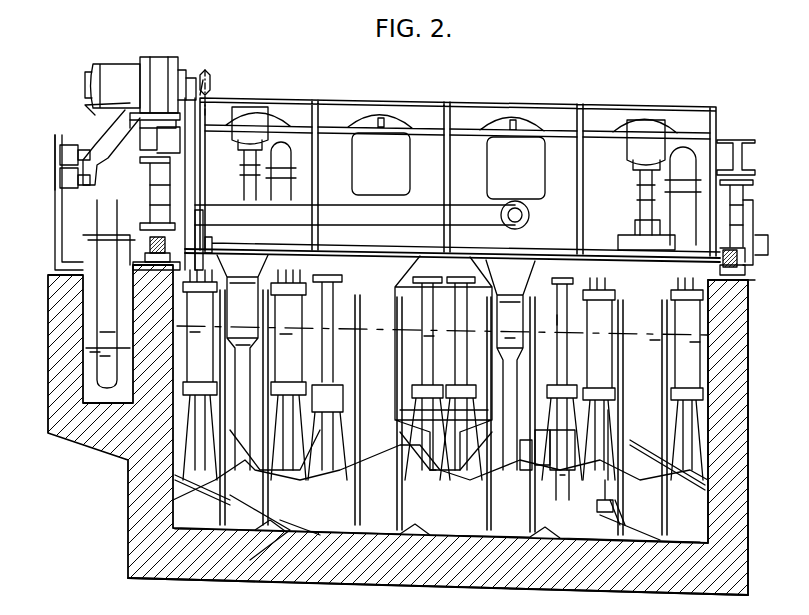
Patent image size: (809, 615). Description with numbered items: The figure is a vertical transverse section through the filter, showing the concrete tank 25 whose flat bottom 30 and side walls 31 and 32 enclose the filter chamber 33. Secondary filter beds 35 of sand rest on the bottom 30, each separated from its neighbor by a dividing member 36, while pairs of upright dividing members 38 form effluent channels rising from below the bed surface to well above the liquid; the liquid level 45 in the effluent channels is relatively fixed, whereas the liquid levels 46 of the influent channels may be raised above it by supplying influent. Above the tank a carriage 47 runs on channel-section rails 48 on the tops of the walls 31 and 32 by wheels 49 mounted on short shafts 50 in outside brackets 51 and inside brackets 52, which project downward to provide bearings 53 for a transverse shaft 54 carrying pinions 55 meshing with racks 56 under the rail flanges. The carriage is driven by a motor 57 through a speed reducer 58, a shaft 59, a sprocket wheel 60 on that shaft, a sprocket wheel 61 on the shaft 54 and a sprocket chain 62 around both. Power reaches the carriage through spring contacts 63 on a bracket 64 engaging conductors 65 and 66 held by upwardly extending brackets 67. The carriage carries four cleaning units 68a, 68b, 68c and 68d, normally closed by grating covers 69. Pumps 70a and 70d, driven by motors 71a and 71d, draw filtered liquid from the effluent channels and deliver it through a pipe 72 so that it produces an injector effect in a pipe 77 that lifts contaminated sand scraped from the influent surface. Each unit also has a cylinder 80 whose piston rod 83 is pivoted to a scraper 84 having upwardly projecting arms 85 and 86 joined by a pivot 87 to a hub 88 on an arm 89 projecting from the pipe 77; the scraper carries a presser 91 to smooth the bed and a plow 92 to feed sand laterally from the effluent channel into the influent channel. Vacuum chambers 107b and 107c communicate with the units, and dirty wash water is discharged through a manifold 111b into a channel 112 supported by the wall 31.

The tank 25 is at (118, 575).
The bottom 30 is at (488, 570).
The side wall 31 is at (135, 484).
The side wall 32 is at (740, 520).
The filter chamber 33 is at (710, 352).
The secondary filter bed 35 is at (620, 520).
The dividing member 36 is at (330, 515).
The dividing member 38 is at (238, 520).
The liquid level 45 is at (243, 345).
The liquid level 46 is at (292, 333).
The carriage 47 is at (84, 106).
The rail 48 is at (130, 228).
The wheel 49 is at (160, 185).
The short shaft 50 is at (755, 218).
The outside bracket 51 is at (165, 200).
The inside bracket 52 is at (183, 202).
The bearing 53 is at (152, 258).
The transverse shaft 54 is at (326, 248).
The pinion 55 is at (143, 258).
The rack 56 is at (148, 245).
The motor 57 is at (116, 62).
The speed reducer 58 is at (160, 57).
The shaft 59 is at (192, 75).
The sprocket wheel 60 is at (208, 76).
The sprocket wheel 61 is at (213, 242).
The sprocket chain 62 is at (208, 105).
The spring contact 63 is at (86, 150).
The bracket 64 is at (122, 133).
The conductor 65 is at (62, 178).
The conductor 66 is at (60, 150).
The bracket 67 is at (54, 226).
The cleaning unit 68a is at (268, 110).
The cleaning unit 68b is at (395, 105).
The cleaning unit 68c is at (495, 108).
The cleaning unit 68d is at (634, 108).
The cover 69 is at (312, 98).
The pump 70a is at (273, 210).
The pump 70d is at (633, 210).
The motor 71a is at (270, 100).
The motor 71d is at (650, 135).
The pipe 72 is at (282, 162).
The pipe 77 is at (560, 320).
The cylinder 80 is at (690, 372).
The piston rod 83 is at (640, 420).
The scraper 84 is at (696, 473).
The arm 85 is at (610, 440).
The arm 86 is at (600, 450).
The pivot 87 is at (538, 395).
The hub 88 is at (560, 395).
The arm 89 is at (537, 400).
The presser 91 is at (700, 488).
The plow 92 is at (740, 543).
The chamber 107b is at (392, 152).
The chamber 107c is at (505, 110).
The manifold 111b is at (100, 336).
The channel 112 is at (95, 312).